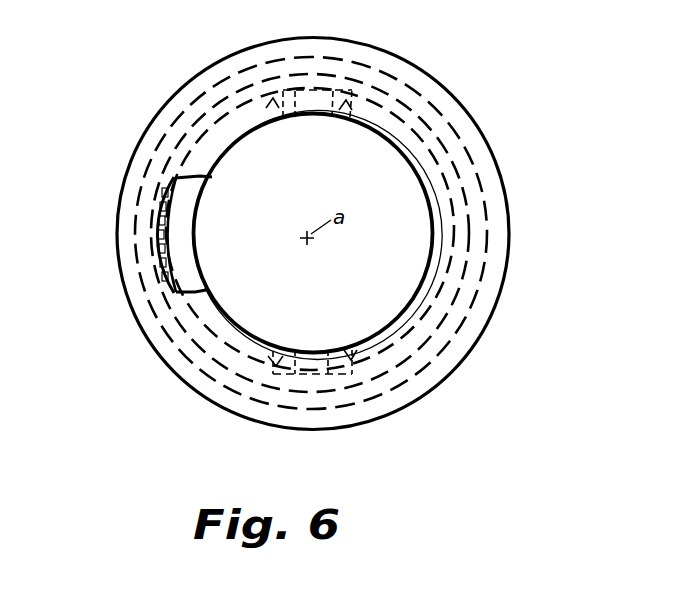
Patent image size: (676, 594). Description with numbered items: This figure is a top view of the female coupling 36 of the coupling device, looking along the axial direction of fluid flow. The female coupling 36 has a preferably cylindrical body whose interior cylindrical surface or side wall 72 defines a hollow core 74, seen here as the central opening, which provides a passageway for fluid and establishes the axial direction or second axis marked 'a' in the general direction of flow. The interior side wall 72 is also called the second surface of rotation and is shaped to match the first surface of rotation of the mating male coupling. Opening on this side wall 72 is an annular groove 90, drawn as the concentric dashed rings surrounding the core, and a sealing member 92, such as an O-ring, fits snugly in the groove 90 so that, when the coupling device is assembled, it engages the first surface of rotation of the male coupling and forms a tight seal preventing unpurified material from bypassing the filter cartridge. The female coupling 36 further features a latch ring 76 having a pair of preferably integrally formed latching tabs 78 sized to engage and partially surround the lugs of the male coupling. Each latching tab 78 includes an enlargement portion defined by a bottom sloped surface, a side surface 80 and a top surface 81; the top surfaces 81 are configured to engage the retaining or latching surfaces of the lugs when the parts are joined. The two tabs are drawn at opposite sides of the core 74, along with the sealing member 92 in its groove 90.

The female coupling 36 is at (498, 144).
The interior cylindrical side wall 72 is at (173, 378).
The hollow core 74 is at (380, 279).
The latch ring 76 is at (346, 118).
The latching tabs 78 is at (306, 118).
The side surface 80 is at (277, 120).
The top surfaces 81 is at (282, 102).
The annular groove 90 is at (198, 140).
The sealing member 92 is at (186, 229).